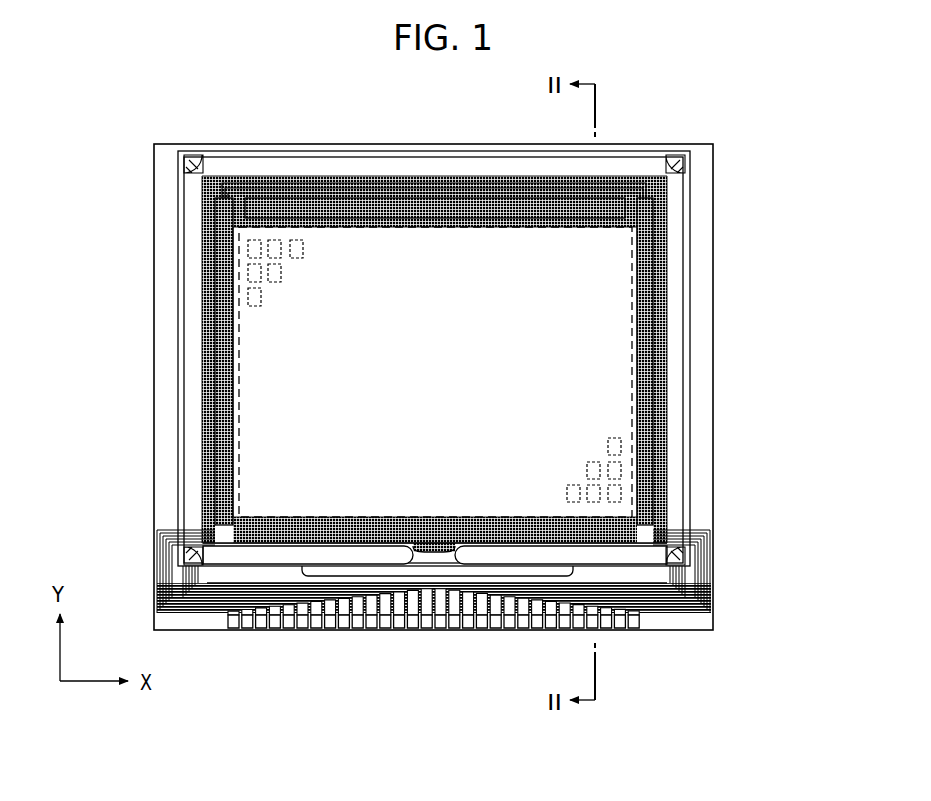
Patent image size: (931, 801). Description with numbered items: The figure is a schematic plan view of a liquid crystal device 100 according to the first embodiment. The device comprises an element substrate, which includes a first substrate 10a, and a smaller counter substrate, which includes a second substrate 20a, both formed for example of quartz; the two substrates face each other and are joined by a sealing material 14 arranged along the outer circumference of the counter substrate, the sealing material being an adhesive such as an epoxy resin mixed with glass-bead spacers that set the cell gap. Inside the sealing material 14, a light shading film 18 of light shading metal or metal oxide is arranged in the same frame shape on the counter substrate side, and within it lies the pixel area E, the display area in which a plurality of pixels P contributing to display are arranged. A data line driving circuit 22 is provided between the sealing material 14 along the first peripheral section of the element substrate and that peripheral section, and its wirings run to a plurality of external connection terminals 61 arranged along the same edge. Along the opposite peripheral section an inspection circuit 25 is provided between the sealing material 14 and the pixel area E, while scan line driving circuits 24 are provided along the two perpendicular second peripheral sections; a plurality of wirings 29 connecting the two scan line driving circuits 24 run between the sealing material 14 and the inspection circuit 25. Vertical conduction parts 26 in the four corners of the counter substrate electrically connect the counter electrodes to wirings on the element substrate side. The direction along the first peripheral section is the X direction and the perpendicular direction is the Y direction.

The liquid crystal device 100 is at (712, 107).
The first substrate 10a is at (260, 144).
The second substrate 20a is at (352, 151).
The wirings 29 is at (398, 180).
The inspection circuit 25 is at (473, 208).
The scan line driving circuits 24 is at (226, 342).
The light shading film 18 is at (320, 526).
The sealing material 14 is at (672, 302).
The pixel area E is at (632, 372).
The pixels P is at (262, 298).
The data line driving circuit 22 is at (220, 578).
The vertical conduction parts 26 is at (184, 163).
The external connection terminals 61 is at (317, 622).